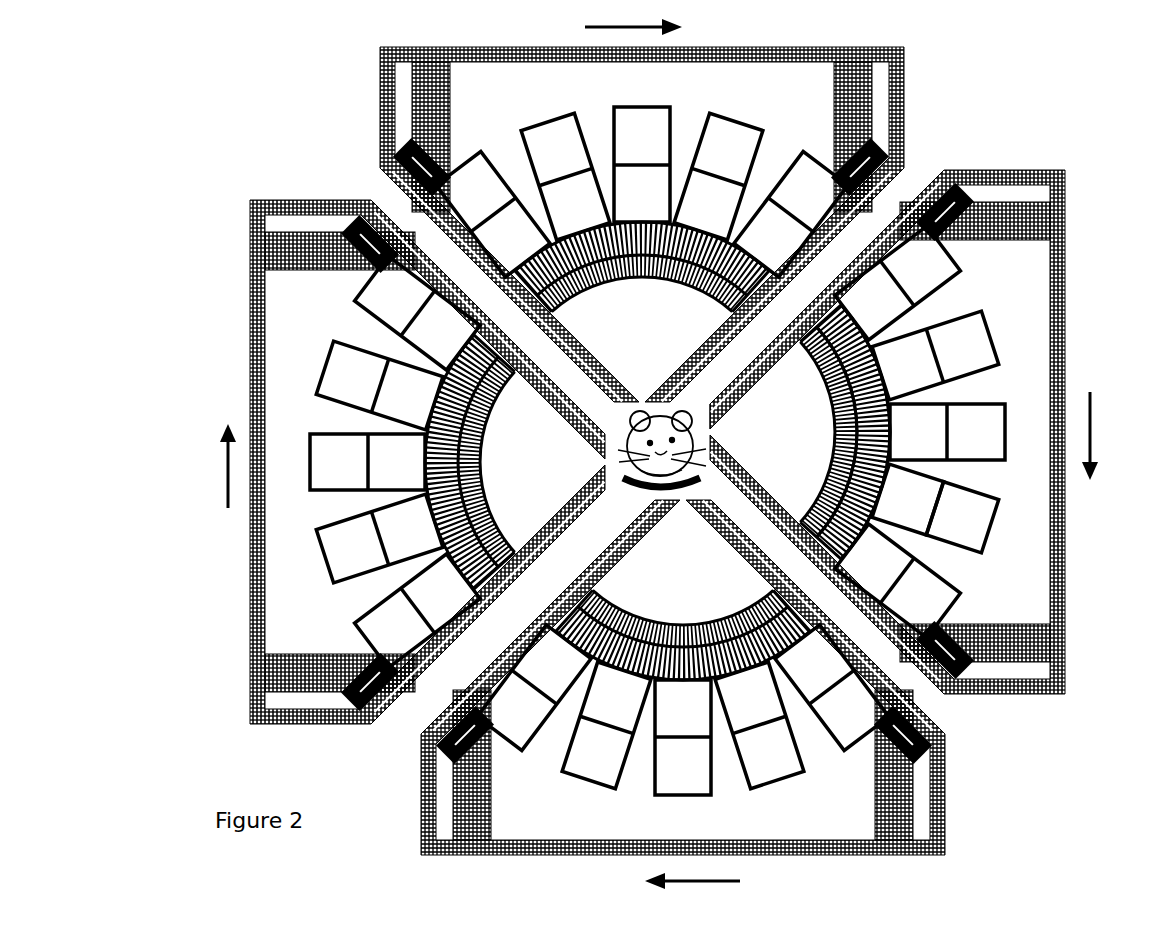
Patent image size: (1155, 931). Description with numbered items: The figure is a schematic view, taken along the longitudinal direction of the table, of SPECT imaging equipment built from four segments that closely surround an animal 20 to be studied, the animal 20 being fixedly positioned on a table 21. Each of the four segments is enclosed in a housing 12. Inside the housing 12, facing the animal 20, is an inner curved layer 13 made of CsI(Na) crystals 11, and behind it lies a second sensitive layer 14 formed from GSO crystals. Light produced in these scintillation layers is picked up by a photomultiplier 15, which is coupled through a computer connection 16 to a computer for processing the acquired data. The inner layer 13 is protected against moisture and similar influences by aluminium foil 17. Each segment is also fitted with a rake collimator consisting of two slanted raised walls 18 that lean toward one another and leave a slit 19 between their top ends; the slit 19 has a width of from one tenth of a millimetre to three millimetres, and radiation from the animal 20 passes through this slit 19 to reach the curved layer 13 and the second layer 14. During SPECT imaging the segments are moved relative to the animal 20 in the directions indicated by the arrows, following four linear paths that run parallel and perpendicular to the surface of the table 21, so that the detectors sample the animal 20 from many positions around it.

The CsI(Na) crystals 11 is at (828, 436).
The housing 12 is at (1068, 560).
The inner curved layer 13 is at (822, 407).
The second sensitive layer 14 is at (887, 437).
The photomultiplier 15 is at (908, 499).
The computer connection 16 is at (962, 517).
The aluminium foil 17 is at (822, 476).
The slanted raised walls 18 is at (785, 522).
The slit 19 is at (716, 430).
The animal 20 is at (694, 406).
The table 21 is at (637, 494).